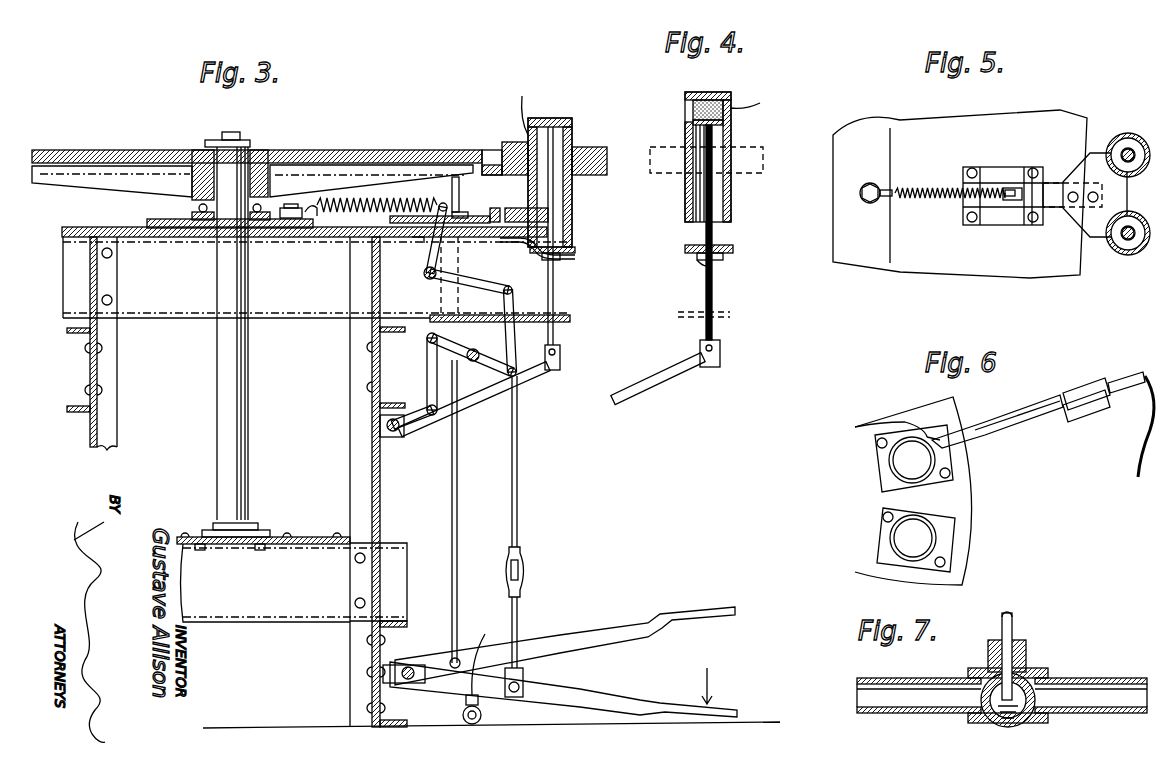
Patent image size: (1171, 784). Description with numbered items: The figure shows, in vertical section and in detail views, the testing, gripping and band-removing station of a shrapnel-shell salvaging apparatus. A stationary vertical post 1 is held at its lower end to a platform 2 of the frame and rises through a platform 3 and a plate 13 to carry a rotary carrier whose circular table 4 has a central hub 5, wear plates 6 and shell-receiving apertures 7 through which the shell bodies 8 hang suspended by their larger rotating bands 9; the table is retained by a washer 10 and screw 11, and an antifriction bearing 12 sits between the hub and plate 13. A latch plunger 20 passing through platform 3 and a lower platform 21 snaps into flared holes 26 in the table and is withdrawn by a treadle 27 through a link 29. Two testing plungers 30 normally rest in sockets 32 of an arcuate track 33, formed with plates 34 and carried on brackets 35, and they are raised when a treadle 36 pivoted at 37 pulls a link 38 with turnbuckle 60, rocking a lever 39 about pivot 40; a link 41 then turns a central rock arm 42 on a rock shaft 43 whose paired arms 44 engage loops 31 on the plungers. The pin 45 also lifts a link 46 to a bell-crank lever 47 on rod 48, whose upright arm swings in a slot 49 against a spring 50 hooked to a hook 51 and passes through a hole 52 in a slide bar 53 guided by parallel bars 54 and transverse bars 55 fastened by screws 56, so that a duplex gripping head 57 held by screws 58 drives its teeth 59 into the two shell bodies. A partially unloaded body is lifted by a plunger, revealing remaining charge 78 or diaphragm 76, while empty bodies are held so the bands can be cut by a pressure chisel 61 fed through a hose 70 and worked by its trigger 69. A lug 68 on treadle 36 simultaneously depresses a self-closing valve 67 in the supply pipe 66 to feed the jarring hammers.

In FIG. 3, the stationary vertical post 1 is at (217, 396).
In FIG. 3, the platform 2 is at (302, 537).
In FIG. 3, the platform 3 is at (140, 240).
In FIG. 5, the platform 3 is at (920, 260).
In FIG. 3, the table or turret 4 is at (105, 152).
In FIG. 4, the table or turret 4 is at (763, 165).
In FIG. 6, the table or turret 4 is at (975, 500).
In FIG. 3, the central hub 5 is at (266, 160).
In FIG. 3, the wear plates 6 is at (590, 147).
In FIG. 6, the wear plates 6 is at (950, 465).
In FIG. 3, the shell-receiving apertures 7 is at (515, 142).
In FIG. 3, the shell body 8 is at (540, 118).
In FIG. 4, the shell body 8 is at (710, 92).
In FIG. 5, the shell body 8 is at (1130, 148).
In FIG. 6, the shell body 8 is at (895, 462).
In FIG. 3, the shell-rotating band 9 is at (521, 105).
In FIG. 4, the shell-rotating band 9 is at (751, 100).
In FIG. 6, the shell-rotating band 9 is at (930, 422).
In FIG. 3, the washer 10 is at (246, 141).
In FIG. 3, the screw 11 is at (232, 132).
In FIG. 3, the antifriction bearing 12 is at (198, 208).
In FIG. 3, the plate 13 is at (150, 222).
In FIG. 5, the plate 13 is at (870, 255).
In FIG. 3, the latch bolt or plunger 20 is at (460, 190).
In FIG. 3, the lower platform 21 is at (572, 319).
In FIG. 4, the lower platform 21 is at (732, 314).
In FIG. 3, the latch-bolt holes or apertures 26 is at (490, 150).
In FIG. 3, the latch-releasing treadle 27 is at (597, 632).
In FIG. 3, the vertical link 29 is at (452, 495).
In FIG. 3, the shell-testing plungers 30 is at (555, 298).
In FIG. 4, the shell-testing plungers 30 is at (715, 290).
In FIG. 5, the shell-testing plungers 30 is at (1132, 226).
In FIG. 3, the stirrups or loops 31 is at (565, 120).
In FIG. 4, the stirrups or loops 31 is at (745, 150).
In FIG. 4, the sockets 32 is at (715, 245).
In FIG. 3, the shell-supporting track 33 is at (576, 252).
In FIG. 4, the shell-supporting track 33 is at (733, 249).
In FIG. 3, the plates 34 is at (562, 260).
In FIG. 4, the plates 34 is at (698, 262).
In FIG. 3, the brackets 35 is at (530, 250).
In FIG. 3, the treadle 36 is at (632, 698).
In FIG. 3, the pivot 37 is at (409, 667).
In FIG. 3, the vertical link 38 is at (519, 509).
In FIG. 3, the lever 39 is at (478, 362).
In FIG. 3, the pivot 40 is at (484, 362).
In FIG. 3, the depending link 41 is at (427, 381).
In FIG. 3, the central rock arm 42 is at (420, 432).
In FIG. 3, the rock shaft 43 is at (393, 433).
In FIG. 3, the rock arms 44 is at (440, 427).
In FIG. 4, the rock arms 44 is at (670, 378).
In FIG. 3, the pivot pin 45 is at (518, 376).
In FIG. 3, the vertical link 46 is at (520, 332).
In FIG. 3, the bell-crank lever 47 is at (475, 282).
In FIG. 5, the bell-crank lever 47 is at (1015, 202).
In FIG. 3, the rod 48 is at (426, 278).
In FIG. 3, the slot 49 is at (418, 240).
In FIG. 3, the spring 50 is at (382, 201).
In FIG. 5, the spring 50 is at (935, 188).
In FIG. 3, the hook 51 is at (312, 205).
In FIG. 5, the hook 51 is at (882, 190).
In FIG. 3, the hole 52 is at (412, 240).
In FIG. 3, the slide bar 53 is at (497, 208).
In FIG. 5, the slide bar 53 is at (1015, 190).
In FIG. 5, the parallel bars 54 is at (993, 167).
In FIG. 3, the transverse bars 55 is at (440, 203).
In FIG. 5, the transverse bars 55 is at (963, 210).
In FIG. 5, the screws 56 is at (972, 168).
In FIG. 3, the duplex shell-gripping head 57 is at (573, 215).
In FIG. 5, the duplex shell-gripping head 57 is at (1090, 153).
In FIG. 5, the screws 58 is at (1092, 192).
In FIG. 5, the pointed studs or teeth 59 is at (1118, 140).
In FIG. 3, the turnbuckle 60 is at (526, 566).
In FIG. 6, the fluid-pressure-operated chisel 61 is at (993, 420).
In FIG. 3, the fluid pressure supply pipe line 66 is at (471, 725).
In FIG. 7, the fluid pressure supply pipe line 66 is at (1090, 678).
In FIG. 3, the self-closing valve 67 is at (464, 700).
In FIG. 7, the self-closing valve 67 is at (1013, 632).
In FIG. 3, the lug 68 is at (483, 653).
In FIG. 6, the trigger 69 is at (1140, 392).
In FIG. 6, the hose 70 is at (1140, 455).
In FIG. 4, the steel diaphragm 76 is at (716, 125).
In FIG. 4, the bursting explosive charge 78 is at (730, 100).